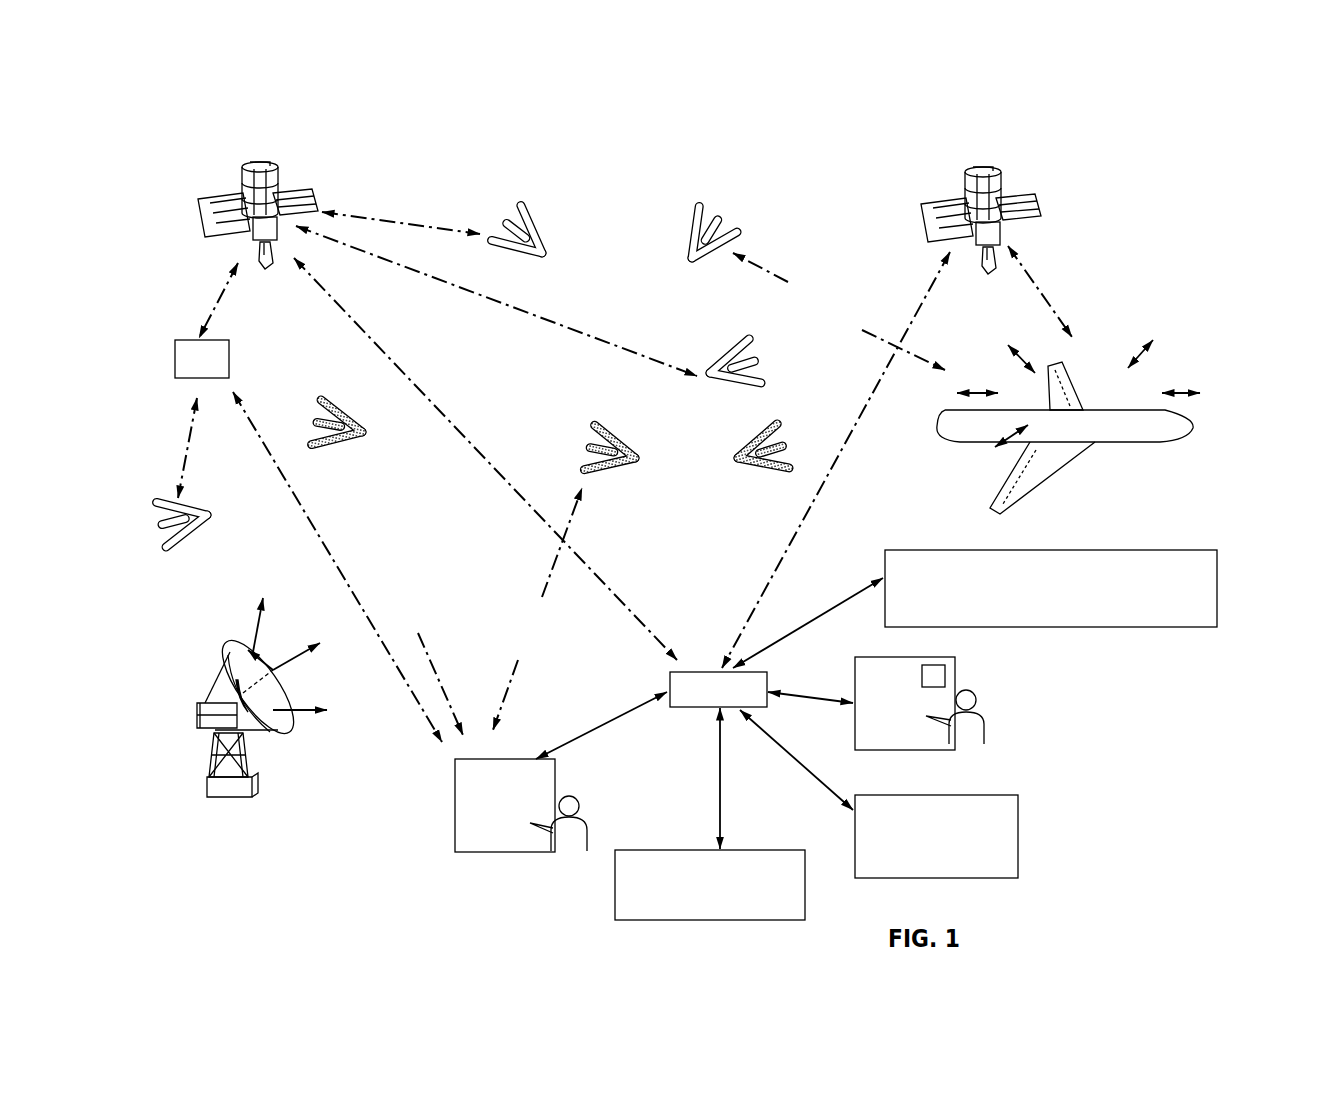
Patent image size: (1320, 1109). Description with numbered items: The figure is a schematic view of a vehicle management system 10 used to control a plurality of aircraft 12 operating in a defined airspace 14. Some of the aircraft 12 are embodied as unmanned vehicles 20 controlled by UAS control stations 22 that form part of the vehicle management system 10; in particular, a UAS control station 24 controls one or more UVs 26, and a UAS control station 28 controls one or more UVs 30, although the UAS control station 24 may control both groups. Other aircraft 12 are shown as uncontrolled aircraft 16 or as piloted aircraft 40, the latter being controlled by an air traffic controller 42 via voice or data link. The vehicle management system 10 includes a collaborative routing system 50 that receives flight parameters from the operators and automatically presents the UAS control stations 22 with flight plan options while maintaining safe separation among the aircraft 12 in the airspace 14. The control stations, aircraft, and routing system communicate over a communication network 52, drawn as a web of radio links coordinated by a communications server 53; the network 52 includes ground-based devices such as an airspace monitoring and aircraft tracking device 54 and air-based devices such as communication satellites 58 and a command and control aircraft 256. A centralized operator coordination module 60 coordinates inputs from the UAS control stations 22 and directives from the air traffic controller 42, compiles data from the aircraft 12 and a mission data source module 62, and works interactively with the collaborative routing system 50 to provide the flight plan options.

The vehicle management system 10 is at (578, 879).
The aircraft 12 is at (488, 391).
The defined airspace 14 is at (800, 162).
The uncontrolled aircraft 16 is at (784, 429).
The unmanned vehicles (UVs) 20 is at (565, 354).
The UAS control stations 22 is at (719, 763).
The UAS control station 24 is at (683, 763).
The UVs 26 is at (322, 392).
The UAS control station 28 is at (933, 657).
The UVs 30 is at (550, 249).
The piloted aircraft 40 is at (178, 552).
The air traffic controller (ATC) 42 is at (210, 341).
The collaborative routing system 50 is at (790, 850).
The communication network 52 is at (632, 427).
The communications server 53 is at (767, 674).
The airspace monitoring and aircraft tracking device 54 is at (250, 754).
The communication satellite 58 is at (280, 172).
The centralized operator coordination module 60 is at (1008, 795).
The mission data source module 62 is at (1188, 550).
The command and control aircraft 256 is at (1195, 421).